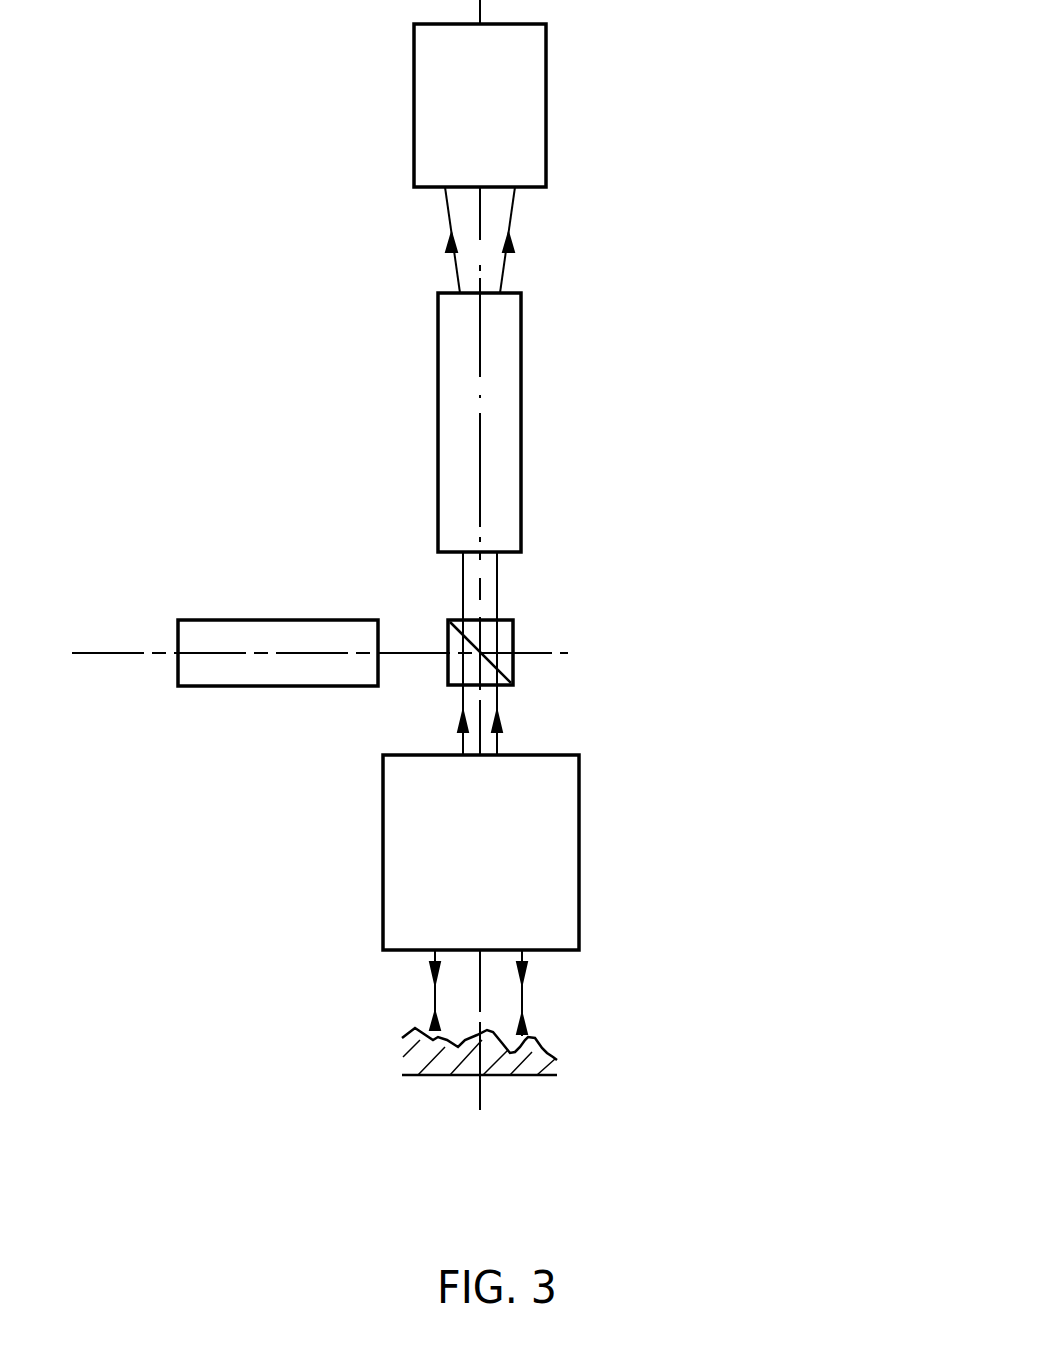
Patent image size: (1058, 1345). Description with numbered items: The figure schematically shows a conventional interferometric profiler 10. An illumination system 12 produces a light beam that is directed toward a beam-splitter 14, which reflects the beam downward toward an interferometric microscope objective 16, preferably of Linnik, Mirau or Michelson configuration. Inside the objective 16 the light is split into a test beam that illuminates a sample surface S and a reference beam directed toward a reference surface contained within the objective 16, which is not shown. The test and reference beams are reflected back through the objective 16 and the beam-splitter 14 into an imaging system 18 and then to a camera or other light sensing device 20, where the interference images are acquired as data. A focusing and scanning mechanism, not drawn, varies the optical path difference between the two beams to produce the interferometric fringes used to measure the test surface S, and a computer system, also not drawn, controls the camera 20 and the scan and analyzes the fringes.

The interferometric profiler 10 is at (633, 338).
The illumination system 12 is at (198, 643).
The beam-splitter 14 is at (508, 633).
The interferometric microscope objective 16 is at (562, 902).
The imaging system 18 is at (498, 423).
The camera 20 is at (527, 77).
The sample surface S is at (558, 1057).